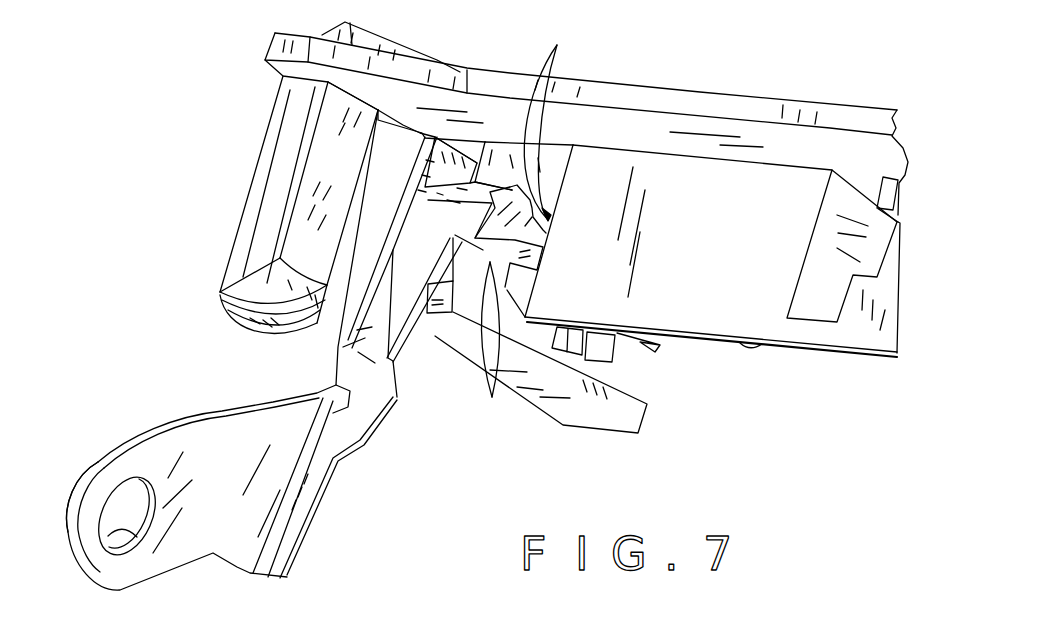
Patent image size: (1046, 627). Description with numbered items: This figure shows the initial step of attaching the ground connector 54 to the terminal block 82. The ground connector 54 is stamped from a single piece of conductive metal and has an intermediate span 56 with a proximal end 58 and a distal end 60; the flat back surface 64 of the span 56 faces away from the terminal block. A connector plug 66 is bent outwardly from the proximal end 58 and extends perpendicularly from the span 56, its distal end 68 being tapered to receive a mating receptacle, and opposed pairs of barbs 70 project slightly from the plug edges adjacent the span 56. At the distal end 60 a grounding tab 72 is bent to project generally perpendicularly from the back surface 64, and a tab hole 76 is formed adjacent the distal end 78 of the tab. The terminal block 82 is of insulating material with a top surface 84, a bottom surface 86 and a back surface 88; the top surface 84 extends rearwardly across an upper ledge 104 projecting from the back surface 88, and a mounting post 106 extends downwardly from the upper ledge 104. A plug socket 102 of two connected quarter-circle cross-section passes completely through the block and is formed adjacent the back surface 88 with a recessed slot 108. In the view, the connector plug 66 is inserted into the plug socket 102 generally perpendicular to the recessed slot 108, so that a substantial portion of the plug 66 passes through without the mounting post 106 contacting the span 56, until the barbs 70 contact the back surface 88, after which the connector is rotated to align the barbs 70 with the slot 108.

The ground connector 54 is at (345, 361).
The intermediate span 56 is at (387, 320).
The proximal end 58 is at (500, 172).
The distal end 60 is at (265, 577).
The back surface 64 is at (343, 343).
The connector plug 66 is at (637, 343).
The distal end of the plug 68 is at (660, 340).
The barbs 70 is at (525, 220).
The grounding tab 72 is at (194, 498).
The tab hole 76 is at (127, 523).
The distal end of the tab 78 is at (80, 483).
The terminal block 82 is at (726, 86).
The top surface 84 is at (780, 97).
The bottom surface 86 is at (593, 420).
The back surface 88 is at (760, 290).
The plug socket 102 is at (490, 233).
The upper ledge 104 is at (663, 137).
The mounting post 106 is at (283, 153).
The recessed slot 108 is at (550, 218).